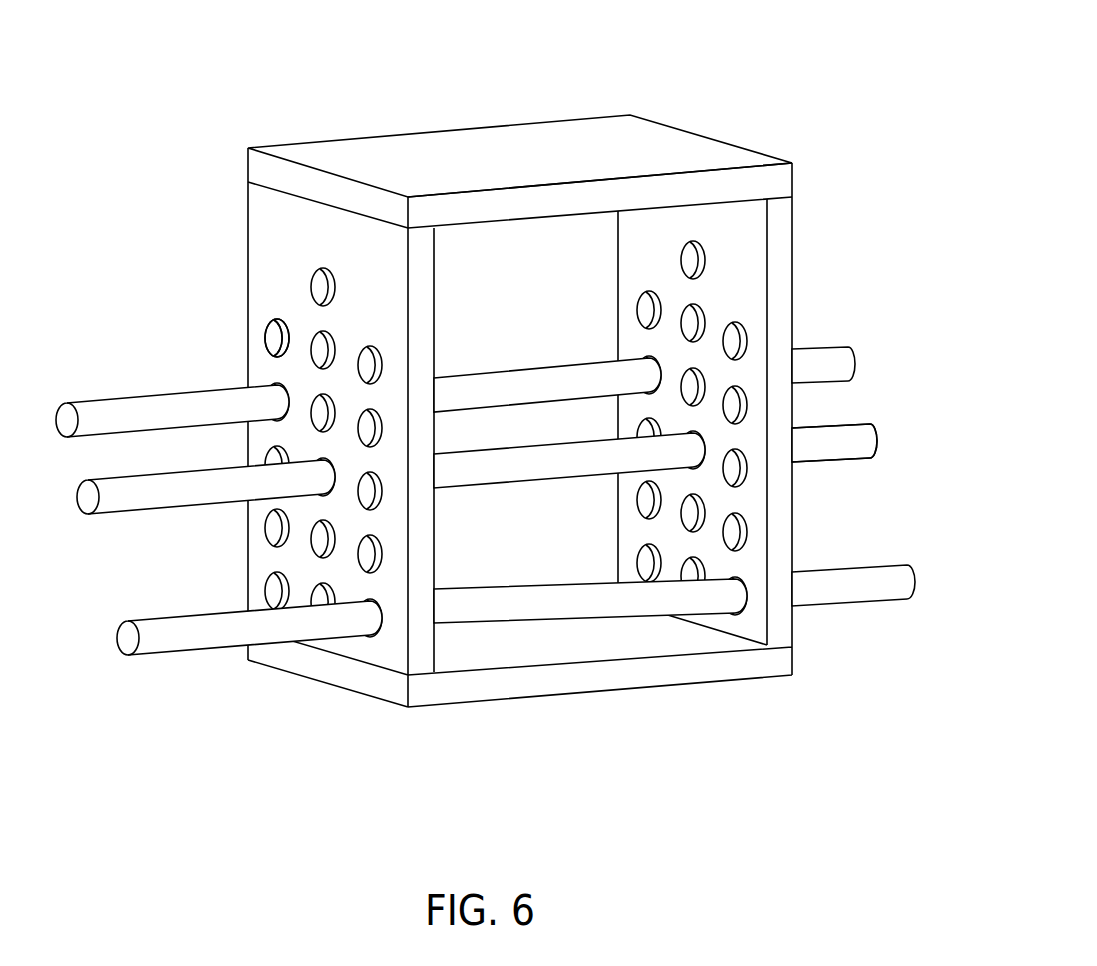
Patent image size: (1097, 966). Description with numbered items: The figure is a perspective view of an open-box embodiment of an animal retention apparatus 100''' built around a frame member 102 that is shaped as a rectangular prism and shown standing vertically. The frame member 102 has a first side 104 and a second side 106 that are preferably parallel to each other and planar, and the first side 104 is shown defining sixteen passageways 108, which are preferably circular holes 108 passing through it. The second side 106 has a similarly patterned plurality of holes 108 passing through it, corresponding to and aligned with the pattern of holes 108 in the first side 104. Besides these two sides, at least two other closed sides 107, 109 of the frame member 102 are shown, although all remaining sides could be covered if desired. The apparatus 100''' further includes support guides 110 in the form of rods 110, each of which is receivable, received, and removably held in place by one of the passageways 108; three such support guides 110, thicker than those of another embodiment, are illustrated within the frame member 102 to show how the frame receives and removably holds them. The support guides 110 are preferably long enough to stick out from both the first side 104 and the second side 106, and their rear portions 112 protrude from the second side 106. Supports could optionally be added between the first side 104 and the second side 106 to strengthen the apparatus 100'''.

The animal retention apparatus 100''' is at (515, 414).
The frame member 102 is at (422, 696).
The first side 104 is at (275, 237).
The second side 106 is at (755, 310).
The closed side 107 is at (481, 145).
The passageway 108 is at (280, 340).
The closed side 109 is at (542, 687).
The support guide 110 is at (170, 637).
The rear portion 112 is at (837, 437).